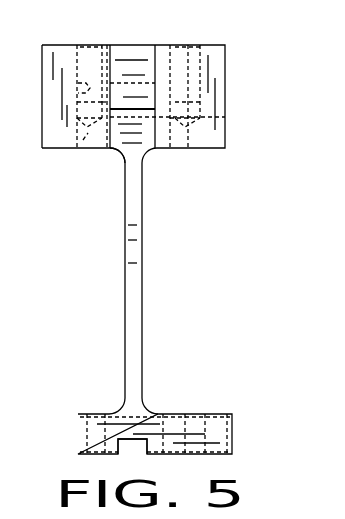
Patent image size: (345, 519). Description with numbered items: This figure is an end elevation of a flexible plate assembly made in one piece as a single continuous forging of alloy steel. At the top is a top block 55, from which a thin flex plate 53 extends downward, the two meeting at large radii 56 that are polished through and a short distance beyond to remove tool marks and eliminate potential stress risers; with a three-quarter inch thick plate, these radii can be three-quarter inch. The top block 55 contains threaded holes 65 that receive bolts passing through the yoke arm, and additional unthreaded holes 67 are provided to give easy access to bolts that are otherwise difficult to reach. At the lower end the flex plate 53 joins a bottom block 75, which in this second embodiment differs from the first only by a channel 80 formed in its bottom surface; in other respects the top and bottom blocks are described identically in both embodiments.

The flex plate 53 is at (143, 262).
The top block 55 is at (232, 107).
The large radii 56 is at (110, 150).
The threaded holes 65 is at (110, 91).
The unthreaded holes 67 is at (88, 135).
The bottom block 75 is at (196, 404).
The channel 80 is at (133, 450).